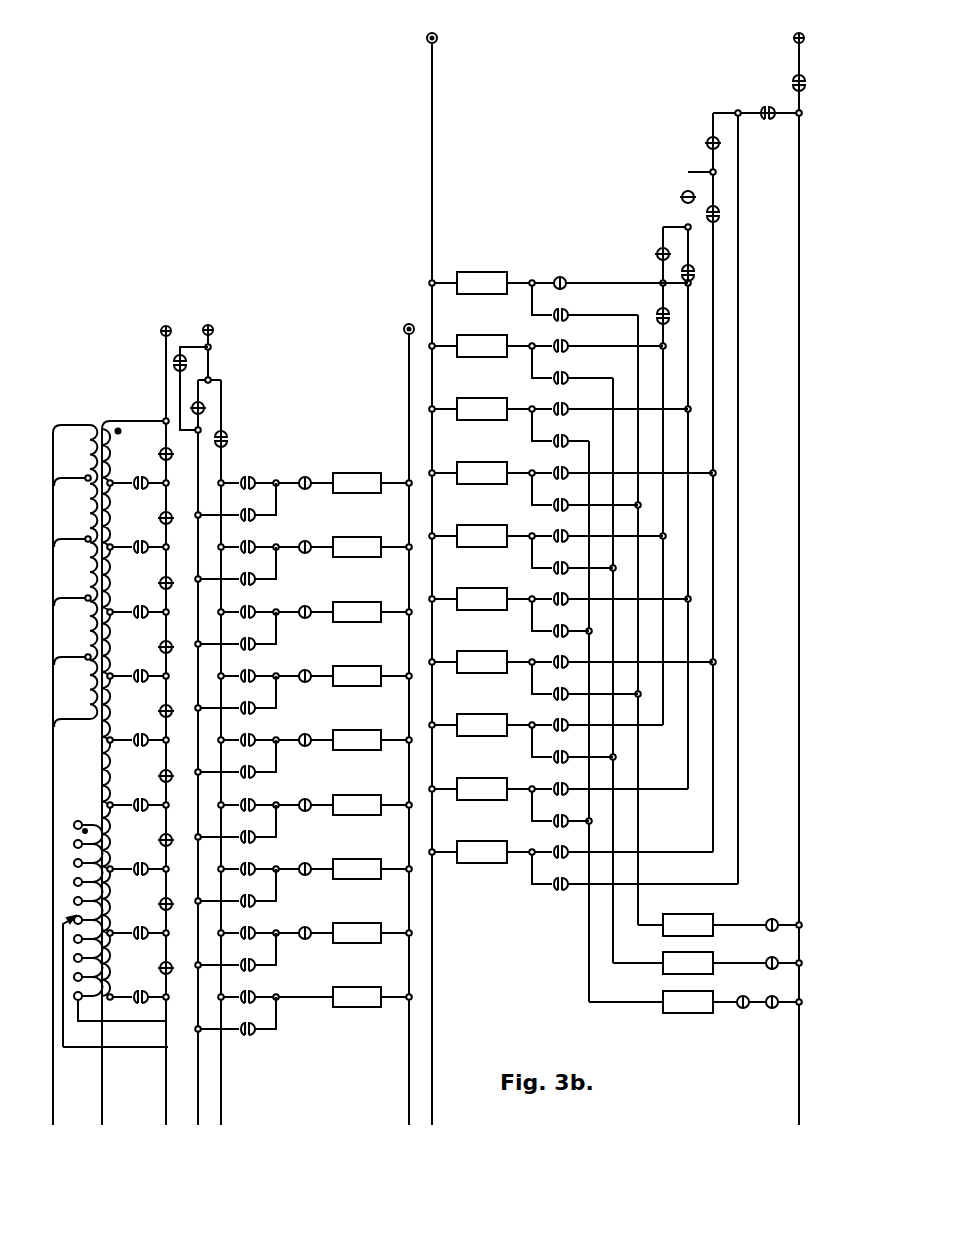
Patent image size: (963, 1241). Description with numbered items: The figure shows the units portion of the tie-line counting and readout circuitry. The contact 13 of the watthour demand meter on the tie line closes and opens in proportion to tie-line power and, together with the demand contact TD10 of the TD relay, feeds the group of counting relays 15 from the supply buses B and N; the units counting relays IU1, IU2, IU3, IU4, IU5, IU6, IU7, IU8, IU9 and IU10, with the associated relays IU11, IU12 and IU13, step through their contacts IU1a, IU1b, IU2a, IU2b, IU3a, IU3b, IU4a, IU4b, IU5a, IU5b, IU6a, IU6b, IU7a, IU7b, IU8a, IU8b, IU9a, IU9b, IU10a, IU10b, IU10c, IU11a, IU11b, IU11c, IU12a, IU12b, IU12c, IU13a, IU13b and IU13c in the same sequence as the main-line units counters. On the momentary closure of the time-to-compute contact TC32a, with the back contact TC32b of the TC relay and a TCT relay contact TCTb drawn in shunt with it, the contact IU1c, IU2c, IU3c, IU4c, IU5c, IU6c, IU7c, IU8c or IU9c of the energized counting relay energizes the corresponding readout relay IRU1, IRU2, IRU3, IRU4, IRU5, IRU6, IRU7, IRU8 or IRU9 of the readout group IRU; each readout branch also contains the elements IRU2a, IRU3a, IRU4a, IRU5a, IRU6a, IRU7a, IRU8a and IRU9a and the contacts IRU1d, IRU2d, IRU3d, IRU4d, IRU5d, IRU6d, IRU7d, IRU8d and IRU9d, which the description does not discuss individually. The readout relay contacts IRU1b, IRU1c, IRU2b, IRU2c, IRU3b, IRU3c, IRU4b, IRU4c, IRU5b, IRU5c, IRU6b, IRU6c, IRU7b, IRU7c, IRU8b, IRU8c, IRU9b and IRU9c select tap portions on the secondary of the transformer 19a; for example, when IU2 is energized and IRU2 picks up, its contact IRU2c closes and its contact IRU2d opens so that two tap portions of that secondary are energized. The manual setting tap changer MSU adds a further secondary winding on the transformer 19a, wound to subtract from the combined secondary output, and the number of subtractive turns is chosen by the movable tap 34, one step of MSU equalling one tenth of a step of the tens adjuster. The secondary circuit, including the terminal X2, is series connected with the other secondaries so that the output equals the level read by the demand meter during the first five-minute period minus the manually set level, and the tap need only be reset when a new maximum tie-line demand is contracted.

The transformer 19a is at (100, 414).
The manual setting tap changer MSU is at (96, 823).
The movable tap 34 is at (64, 913).
The terminal X2 is at (166, 326).
The B supply terminal B is at (501, 570).
The N supply terminal N is at (419, 570).
The TCT relay contact b TCTb is at (188, 364).
The back contact of relay TC TC32b is at (206, 409).
The TC32 relay contact a TC32a is at (228, 440).
The IRU relay group IRU is at (349, 372).
The group of counting relays 15 is at (343, 420).
The contact member 13 is at (767, 107).
The demand contact TD10 is at (793, 83).
The readout relay IRU1 is at (315, 483).
The readout relay IRU2 is at (315, 547).
The readout relay IRU3 is at (315, 612).
The readout relay IRU4 is at (315, 676).
The readout relay IRU5 is at (315, 740).
The readout relay IRU6 is at (315, 805).
The readout relay IRU7 is at (315, 869).
The readout relay IRU8 is at (315, 933).
The readout relay IRU9 is at (315, 997).
The relay IRU1 contact b IRU1b is at (162, 451).
The relay IRU1 contact c IRU1c is at (156, 478).
The relay IRU1 contact d IRU1d is at (266, 519).
The relay IRU2 coil a IRU2a is at (306, 477).
The relay IRU2 contact b IRU2b is at (162, 515).
The contact of readout relay 1RU2 IRU2c is at (156, 542).
The contact of readout relay 1RU2 IRU2d is at (266, 583).
The relay IRU3 coil a IRU3a is at (306, 541).
The relay IRU3 contact b IRU3b is at (162, 580).
The relay IRU3 contact c IRU3c is at (156, 607).
The relay IRU3 contact d IRU3d is at (266, 648).
The relay IRU4 coil a IRU4a is at (306, 606).
The relay IRU4 contact b IRU4b is at (162, 644).
The relay IRU4 contact c IRU4c is at (156, 671).
The relay IRU4 contact d IRU4d is at (266, 712).
The relay IRU5 coil a IRU5a is at (306, 670).
The relay IRU5 contact b IRU5b is at (162, 708).
The relay IRU5 contact c IRU5c is at (156, 735).
The relay IRU5 contact d IRU5d is at (266, 776).
The relay IRU6 coil a IRU6a is at (306, 734).
The relay IRU6 contact b IRU6b is at (162, 773).
The relay IRU6 contact c IRU6c is at (156, 800).
The relay IRU6 contact d IRU6d is at (266, 841).
The relay IRU7 coil a IRU7a is at (306, 799).
The relay IRU7 contact b IRU7b is at (162, 837).
The relay IRU7 contact c IRU7c is at (156, 864).
The relay IRU7 contact d IRU7d is at (266, 905).
The relay IRU8 coil a IRU8a is at (306, 863).
The relay IRU8 contact b IRU8b is at (162, 901).
The relay IRU8 contact c IRU8c is at (156, 928).
The relay IRU8 contact d IRU8d is at (266, 969).
The relay IRU9 coil a IRU9a is at (306, 927).
The relay IRU9 contact b IRU9b is at (162, 965).
The relay IRU9 contact c IRU9c is at (134, 1007).
The relay IRU9 contact d IRU9d is at (239, 1026).
The relay IU1 contact c IU1c is at (251, 473).
The contact of counting relay 1U2 IU2c is at (250, 541).
The relay IU3 contact c IU3c is at (250, 606).
The relay IU4 contact c IU4c is at (250, 670).
The relay IU5 contact c IU5c is at (250, 734).
The relay IU6 contact c IU6c is at (250, 799).
The relay IU7 contact c IU7c is at (250, 863).
The relay IU8 contact c IU8c is at (250, 927).
The relay IU9 contact c IU9c is at (250, 991).
The counting relay IU1 is at (558, 293).
The counting relay IU2 is at (546, 356).
The counting relay IU3 is at (558, 419).
The counting relay IU4 is at (571, 483).
The counting relay IU5 is at (546, 546).
The counting relay IU6 is at (558, 609).
The counting relay IU7 is at (571, 672).
The counting relay IU8 is at (546, 735).
The counting relay IU9 is at (558, 799).
The counting relay IU10 is at (571, 862).
The relay IU11 is at (720, 925).
The relay IU12 is at (707, 963).
The relay IU13 is at (695, 1002).
The relay IU1 contact a IU1a is at (564, 311).
The relay IU1 contact b IU1b is at (564, 340).
The relay IU2 contact a IU2a is at (564, 374).
The relay IU2 contact b IU2b is at (562, 403).
The relay IU3 contact a IU3a is at (563, 437).
The relay IU3 contact b IU3b is at (562, 467).
The relay IU4 contact a IU4a is at (530, 505).
The relay IU4 contact b IU4b is at (562, 530).
The relay IU5 contact a IU5a is at (530, 568).
The relay IU5 contact b IU5b is at (562, 593).
The relay IU6 contact a IU6a is at (530, 631).
The relay IU6 contact b IU6b is at (562, 656).
The relay IU7 contact a IU7a is at (530, 694).
The relay IU7 contact b IU7b is at (562, 719).
The relay IU8 contact a IU8a is at (530, 757).
The relay IU8 contact b IU8b is at (562, 783).
The relay IU9 contact a IU9a is at (530, 821).
The relay IU9 contact b IU9b is at (562, 846).
The relay IU10 contact a IU10a is at (530, 884).
The relay IU10 contact b IU10b is at (705, 143).
The relay IU10 contact c IU10c is at (772, 996).
The relay IU11 coil a IU11a is at (551, 274).
The relay IU11 contact b IU11b is at (660, 311).
The relay IU11 contact c IU11c is at (743, 1010).
The relay IU12 coil a IU12a is at (655, 254).
The relay IU12 contact b IU12b is at (682, 273).
The relay IU12 contact c IU12c is at (763, 917).
The relay IU13 coil a IU13a is at (680, 197).
The relay IU13 contact b IU13b is at (720, 217).
The relay IU13 contact c IU13c is at (763, 955).